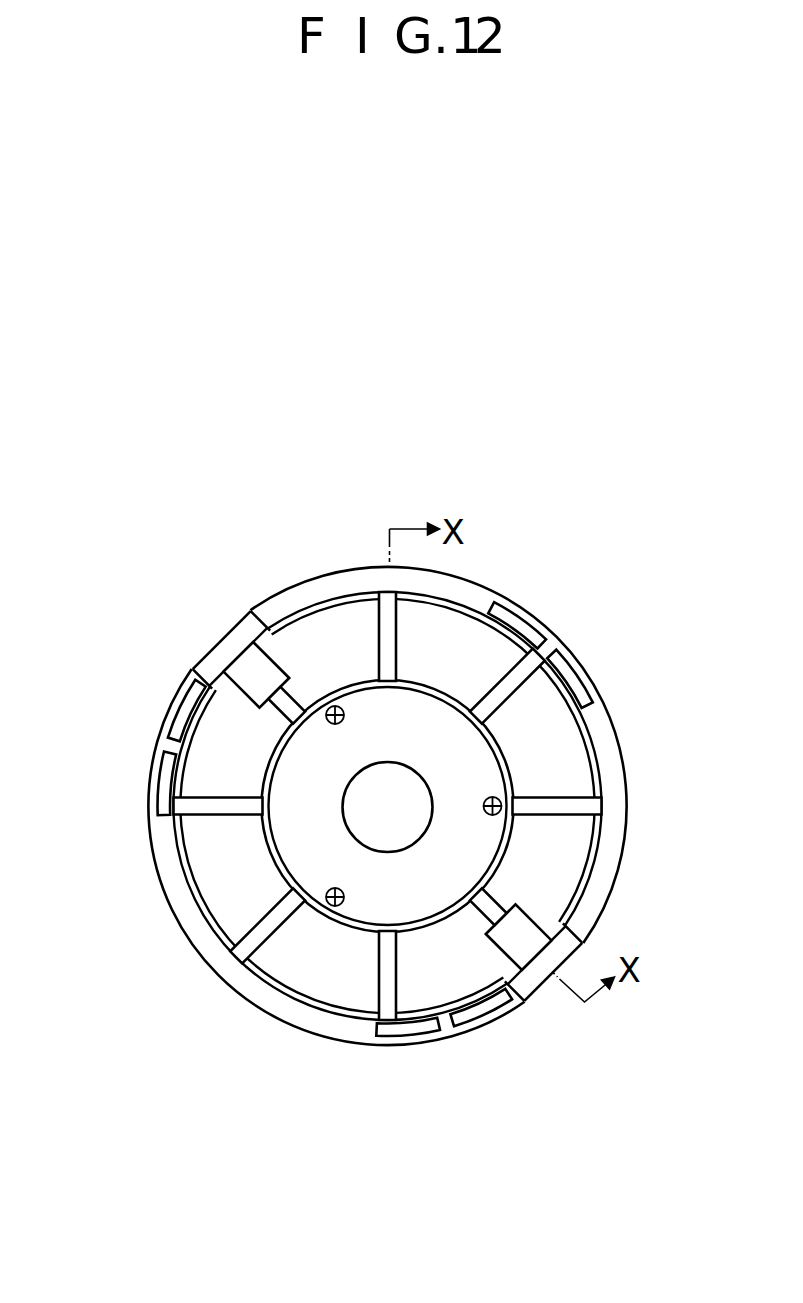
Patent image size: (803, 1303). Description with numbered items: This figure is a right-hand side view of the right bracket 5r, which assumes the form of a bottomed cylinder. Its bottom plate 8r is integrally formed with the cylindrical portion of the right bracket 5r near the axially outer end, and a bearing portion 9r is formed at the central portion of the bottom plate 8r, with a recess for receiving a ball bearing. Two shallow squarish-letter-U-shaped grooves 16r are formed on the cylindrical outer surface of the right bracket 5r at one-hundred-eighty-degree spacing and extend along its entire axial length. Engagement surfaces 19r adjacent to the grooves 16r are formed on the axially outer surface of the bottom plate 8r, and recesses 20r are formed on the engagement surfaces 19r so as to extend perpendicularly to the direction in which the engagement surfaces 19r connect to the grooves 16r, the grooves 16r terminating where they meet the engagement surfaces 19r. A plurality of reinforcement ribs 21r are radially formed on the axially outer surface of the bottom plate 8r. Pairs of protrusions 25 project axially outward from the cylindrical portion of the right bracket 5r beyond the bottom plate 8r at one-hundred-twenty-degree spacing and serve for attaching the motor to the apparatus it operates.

The right bracket 5r is at (546, 582).
The bottom plate 8r is at (364, 618).
The bearing portion 9r is at (297, 838).
The squarish-letter-U-shaped groove 16r is at (238, 622).
The engagement surface 19r is at (233, 660).
The recess 20r is at (250, 688).
The reinforcement rib 21r is at (297, 725).
The protrusion 25 is at (152, 790).